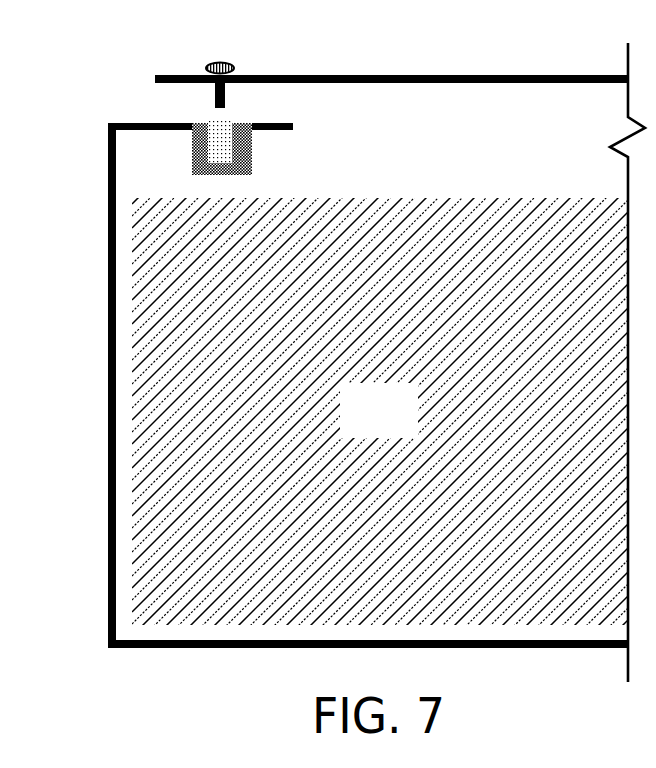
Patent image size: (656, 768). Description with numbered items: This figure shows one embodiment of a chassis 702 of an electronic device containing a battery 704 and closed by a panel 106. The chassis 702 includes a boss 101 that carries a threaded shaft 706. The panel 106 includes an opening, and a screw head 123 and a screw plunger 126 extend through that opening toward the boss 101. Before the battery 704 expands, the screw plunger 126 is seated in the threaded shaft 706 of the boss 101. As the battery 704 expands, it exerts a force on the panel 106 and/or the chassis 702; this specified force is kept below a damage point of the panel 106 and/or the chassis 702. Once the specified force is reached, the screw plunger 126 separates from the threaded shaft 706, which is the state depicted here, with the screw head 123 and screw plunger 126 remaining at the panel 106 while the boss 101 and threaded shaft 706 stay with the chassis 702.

The chassis 702 is at (108, 253).
The battery 704 is at (400, 437).
The threaded shaft 706 is at (208, 147).
The boss 101 is at (280, 144).
The panel 106 is at (300, 75).
The screw head 123 is at (222, 62).
The screw plunger 126 is at (215, 95).